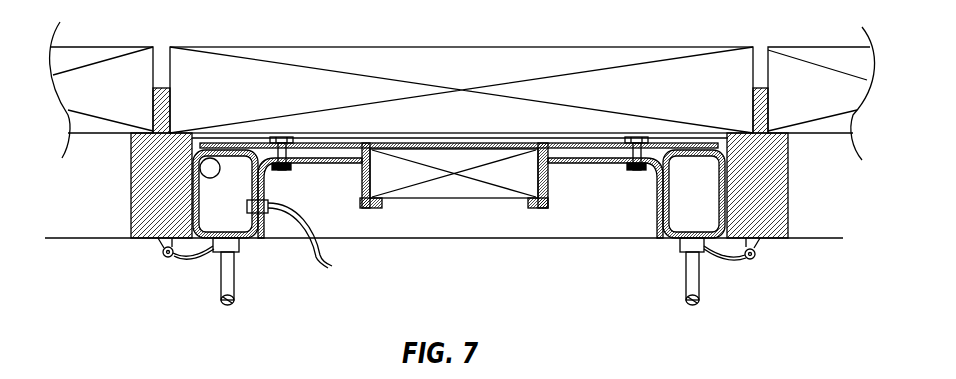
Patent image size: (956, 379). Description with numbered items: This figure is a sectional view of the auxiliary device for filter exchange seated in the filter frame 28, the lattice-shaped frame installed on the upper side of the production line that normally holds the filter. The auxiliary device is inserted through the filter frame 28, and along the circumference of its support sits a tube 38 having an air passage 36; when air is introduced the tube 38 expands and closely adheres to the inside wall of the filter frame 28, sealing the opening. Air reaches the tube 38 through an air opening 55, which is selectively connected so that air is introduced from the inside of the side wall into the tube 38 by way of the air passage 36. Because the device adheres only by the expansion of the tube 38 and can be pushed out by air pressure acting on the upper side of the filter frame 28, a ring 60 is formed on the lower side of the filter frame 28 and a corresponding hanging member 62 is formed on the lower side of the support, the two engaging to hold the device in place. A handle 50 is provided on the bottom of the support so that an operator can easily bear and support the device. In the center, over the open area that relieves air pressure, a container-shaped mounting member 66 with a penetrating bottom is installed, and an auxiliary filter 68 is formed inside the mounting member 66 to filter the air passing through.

The filter frame 28 is at (790, 184).
The air passage 36 is at (248, 210).
The tube 38 is at (205, 172).
The handle 50 is at (232, 303).
The air opening 55 is at (265, 213).
The ring 60 is at (158, 240).
The hanging member 62 is at (208, 256).
The mounting member 66 is at (550, 186).
The auxiliary filter 68 is at (433, 199).